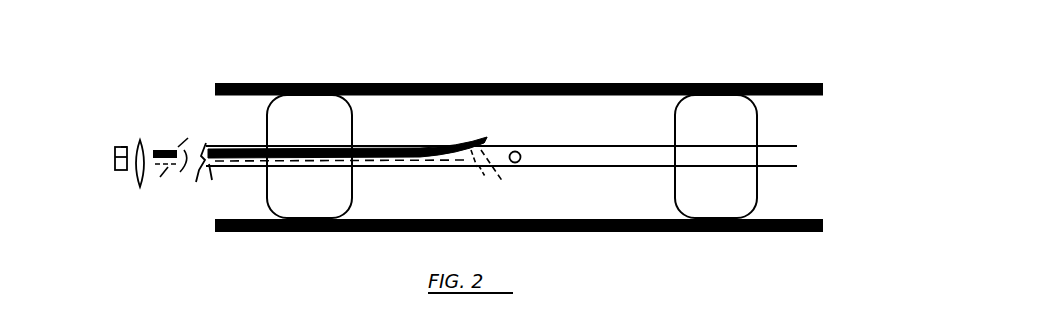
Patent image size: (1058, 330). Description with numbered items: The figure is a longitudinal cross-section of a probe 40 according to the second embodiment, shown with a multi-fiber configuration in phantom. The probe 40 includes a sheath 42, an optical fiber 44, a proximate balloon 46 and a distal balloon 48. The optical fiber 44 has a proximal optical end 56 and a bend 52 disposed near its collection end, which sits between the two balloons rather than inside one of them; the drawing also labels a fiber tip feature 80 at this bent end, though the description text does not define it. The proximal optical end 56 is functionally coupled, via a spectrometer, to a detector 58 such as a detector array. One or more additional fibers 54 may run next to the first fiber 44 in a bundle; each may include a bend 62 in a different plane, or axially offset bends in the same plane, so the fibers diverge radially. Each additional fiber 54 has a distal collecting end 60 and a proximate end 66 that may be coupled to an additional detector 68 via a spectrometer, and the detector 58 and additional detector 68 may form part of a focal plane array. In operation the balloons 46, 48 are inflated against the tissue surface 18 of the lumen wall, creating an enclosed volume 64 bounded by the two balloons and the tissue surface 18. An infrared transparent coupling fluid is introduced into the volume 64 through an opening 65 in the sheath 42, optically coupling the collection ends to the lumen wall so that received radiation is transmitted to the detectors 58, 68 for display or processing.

The tissue surface 18 is at (708, 233).
The probe 40 is at (781, 56).
The sheath 42 is at (566, 167).
The optical fiber 44 is at (373, 148).
The proximate balloon 46 is at (353, 198).
The distal balloon 48 is at (674, 129).
The bend 52 is at (467, 145).
The additional fibers 54 is at (385, 165).
The proximal optical end 56 is at (160, 148).
The detector 58 is at (121, 147).
The distal collecting end 60 is at (505, 172).
The bend 62 is at (475, 165).
The volume 64 is at (604, 134).
The opening 65 is at (522, 157).
The proximate end 66 is at (137, 135).
The additional detector 68 is at (118, 170).
The fiber tip 80 is at (490, 140).